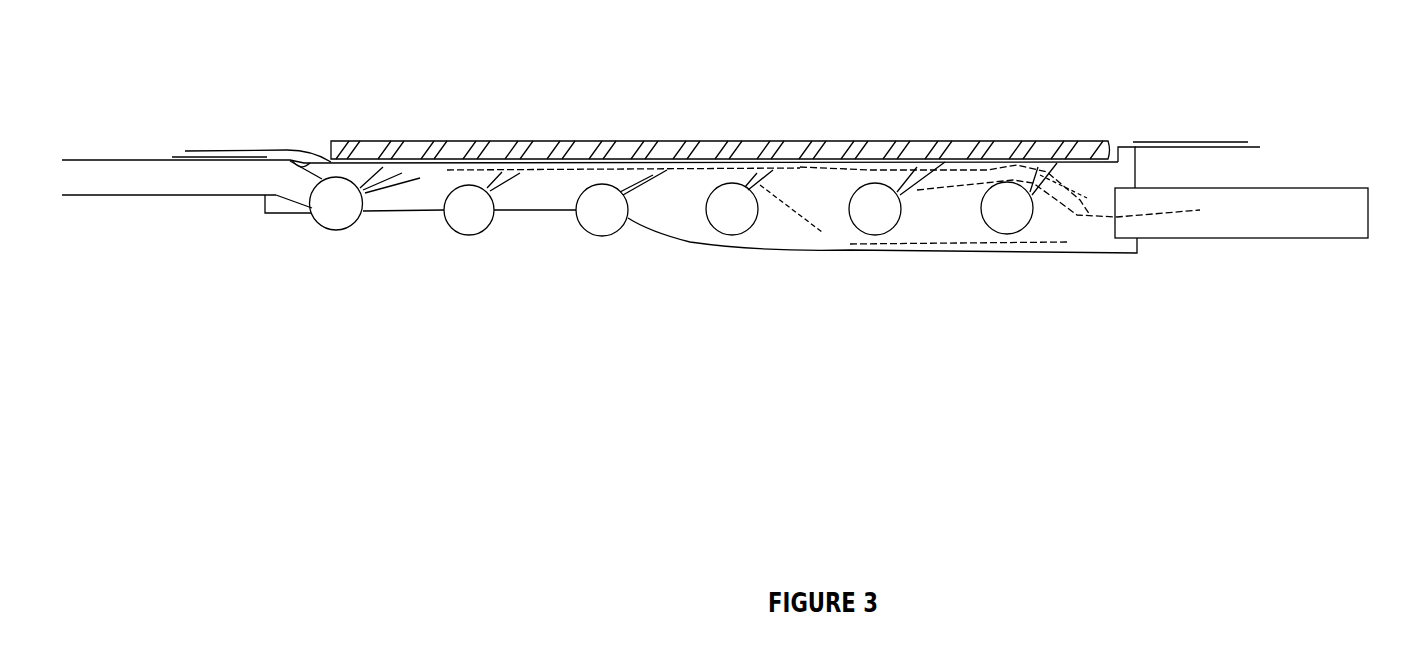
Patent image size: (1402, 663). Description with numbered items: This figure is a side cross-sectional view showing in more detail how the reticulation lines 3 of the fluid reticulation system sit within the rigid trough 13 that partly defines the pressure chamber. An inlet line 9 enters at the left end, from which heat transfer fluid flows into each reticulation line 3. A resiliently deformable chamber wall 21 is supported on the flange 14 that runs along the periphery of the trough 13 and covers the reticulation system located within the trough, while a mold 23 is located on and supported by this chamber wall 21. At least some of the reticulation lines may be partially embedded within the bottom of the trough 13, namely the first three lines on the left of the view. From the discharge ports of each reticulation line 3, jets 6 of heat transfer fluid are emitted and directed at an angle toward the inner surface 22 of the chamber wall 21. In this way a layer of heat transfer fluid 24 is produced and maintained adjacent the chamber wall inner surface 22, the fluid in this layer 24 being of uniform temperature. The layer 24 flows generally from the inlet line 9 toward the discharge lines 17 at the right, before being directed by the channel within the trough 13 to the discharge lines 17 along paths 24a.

The inlet line 9 is at (97, 158).
The resiliently deformable chamber wall 21 is at (299, 139).
The inner surface of the chamber wall 22 is at (293, 150).
The mold 23 is at (826, 137).
The reticulation line 3 is at (348, 228).
The jet of heat transfer fluid 6 is at (642, 199).
The trough 13 is at (279, 216).
The flange 14 is at (1218, 147).
The discharge line 17 is at (1298, 185).
The layer of heat transfer fluid 24 is at (816, 172).
The paths 24a is at (1102, 219).